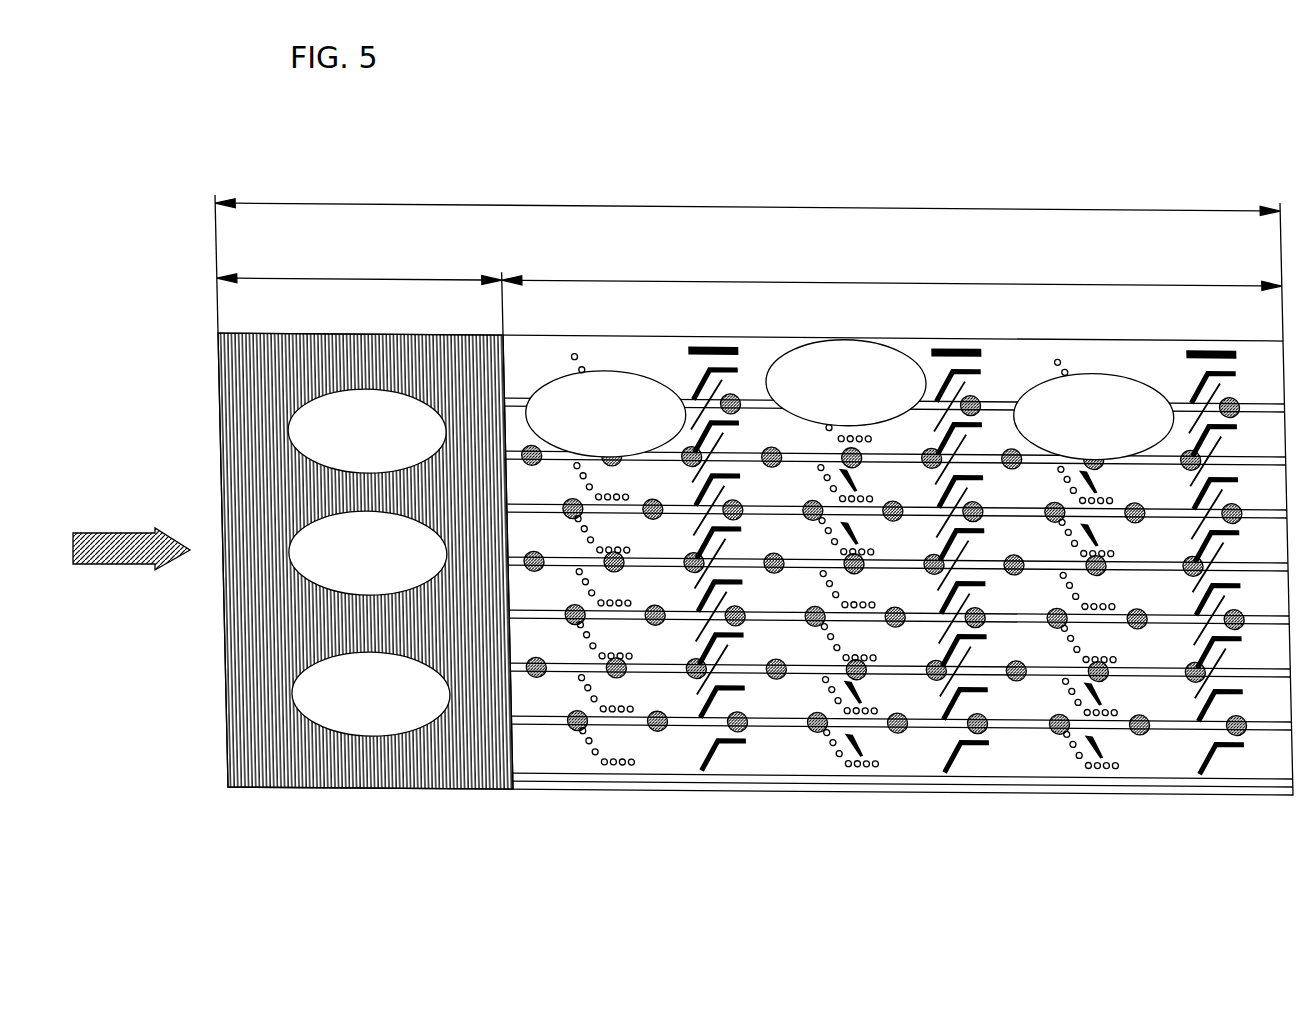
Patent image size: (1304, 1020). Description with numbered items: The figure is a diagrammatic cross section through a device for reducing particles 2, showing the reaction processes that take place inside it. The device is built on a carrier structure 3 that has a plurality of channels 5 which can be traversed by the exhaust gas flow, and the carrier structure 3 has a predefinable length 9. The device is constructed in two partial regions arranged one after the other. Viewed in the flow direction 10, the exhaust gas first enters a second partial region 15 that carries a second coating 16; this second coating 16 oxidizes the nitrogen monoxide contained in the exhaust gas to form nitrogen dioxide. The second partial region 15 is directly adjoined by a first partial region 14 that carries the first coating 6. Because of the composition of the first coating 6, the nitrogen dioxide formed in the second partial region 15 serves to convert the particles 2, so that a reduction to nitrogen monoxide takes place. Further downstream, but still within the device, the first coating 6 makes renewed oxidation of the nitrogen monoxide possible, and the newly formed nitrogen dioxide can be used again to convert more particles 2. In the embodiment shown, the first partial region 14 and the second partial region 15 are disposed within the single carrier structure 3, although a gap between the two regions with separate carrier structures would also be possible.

The particles 2 is at (1140, 733).
The carrier structure 3 is at (985, 780).
The channels 5 is at (797, 707).
The first coating 6 is at (667, 760).
The length 9 is at (754, 478).
The flow direction 10 is at (73, 553).
The first partial region 14 is at (893, 300).
The second partial region 15 is at (365, 513).
The second coating 16 is at (380, 757).